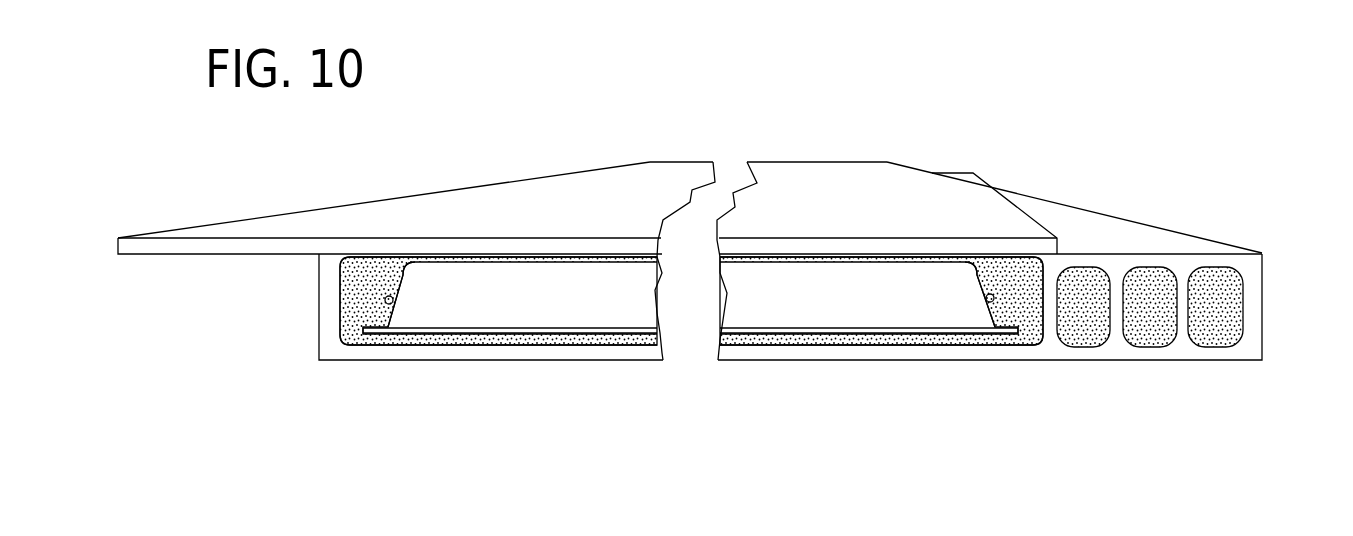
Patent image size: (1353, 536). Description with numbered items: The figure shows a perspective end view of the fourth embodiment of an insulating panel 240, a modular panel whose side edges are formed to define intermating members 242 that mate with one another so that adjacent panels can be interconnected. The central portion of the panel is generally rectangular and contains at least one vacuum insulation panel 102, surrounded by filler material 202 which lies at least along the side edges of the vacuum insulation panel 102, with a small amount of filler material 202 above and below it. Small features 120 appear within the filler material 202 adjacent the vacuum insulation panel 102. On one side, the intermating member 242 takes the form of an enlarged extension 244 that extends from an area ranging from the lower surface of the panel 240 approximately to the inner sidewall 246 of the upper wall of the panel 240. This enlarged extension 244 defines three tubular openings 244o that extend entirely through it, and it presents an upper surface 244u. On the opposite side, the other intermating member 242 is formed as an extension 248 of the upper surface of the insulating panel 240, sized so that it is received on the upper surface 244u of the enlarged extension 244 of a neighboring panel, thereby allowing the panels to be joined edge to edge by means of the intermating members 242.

The insulating panel 240 is at (821, 146).
The extension of the upper surface 248 is at (255, 227).
The intermating members 242 is at (234, 258).
The inner sidewall of the upper wall 246 is at (1023, 258).
The upper surface of the enlarged extension 244u is at (1128, 232).
The enlarged extension 244 is at (1160, 353).
The tubular openings 244o is at (1140, 332).
The filler material 202 is at (375, 275).
The conductor 120 is at (394, 300).
The vacuum insulation panel 102 is at (550, 307).